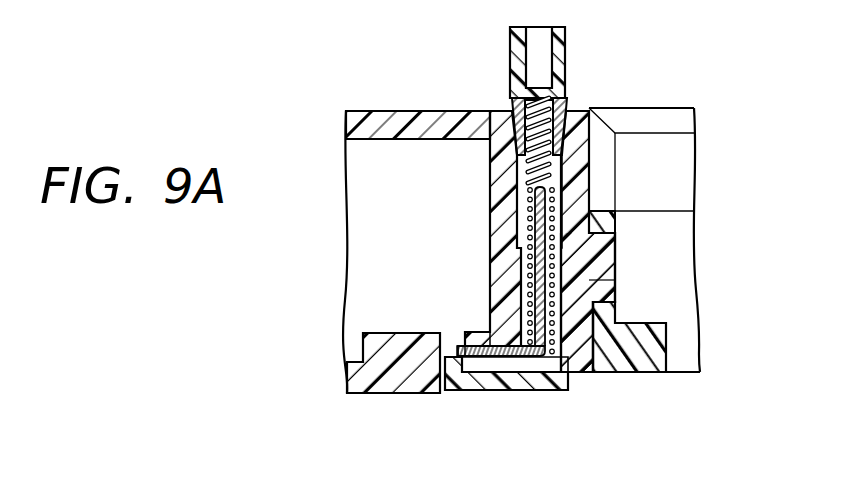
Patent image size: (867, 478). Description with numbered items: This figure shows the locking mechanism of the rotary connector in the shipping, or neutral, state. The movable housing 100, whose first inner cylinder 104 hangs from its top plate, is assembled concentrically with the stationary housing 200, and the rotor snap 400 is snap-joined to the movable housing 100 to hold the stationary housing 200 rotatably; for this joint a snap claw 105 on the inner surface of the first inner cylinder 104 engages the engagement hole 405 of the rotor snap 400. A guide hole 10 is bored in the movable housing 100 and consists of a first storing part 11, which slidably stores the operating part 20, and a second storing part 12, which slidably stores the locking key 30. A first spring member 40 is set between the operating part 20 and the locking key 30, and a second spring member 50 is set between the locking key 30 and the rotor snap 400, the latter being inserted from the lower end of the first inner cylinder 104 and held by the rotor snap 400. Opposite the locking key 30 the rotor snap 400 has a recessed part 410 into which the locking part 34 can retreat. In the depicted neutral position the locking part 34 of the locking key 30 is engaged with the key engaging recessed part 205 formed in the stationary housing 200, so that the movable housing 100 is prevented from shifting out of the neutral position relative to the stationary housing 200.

The guide hole 10 is at (567, 108).
The first storing part 11 is at (563, 195).
The second storing part 12 is at (600, 305).
The operating part 20 is at (567, 40).
The locking key 30 is at (528, 226).
The locking part 34 is at (478, 357).
The first spring member 40 is at (523, 180).
The second spring member 50 is at (525, 300).
The movable housing 100 is at (388, 109).
The first inner cylinder 104 is at (594, 156).
The snap claw 105 is at (608, 247).
The stationary housing 200 is at (368, 395).
The key engaging recessed part 205 is at (460, 345).
The rotor snap 400 is at (630, 373).
The engagement hole 405 is at (608, 270).
The recessed part 410 is at (517, 373).